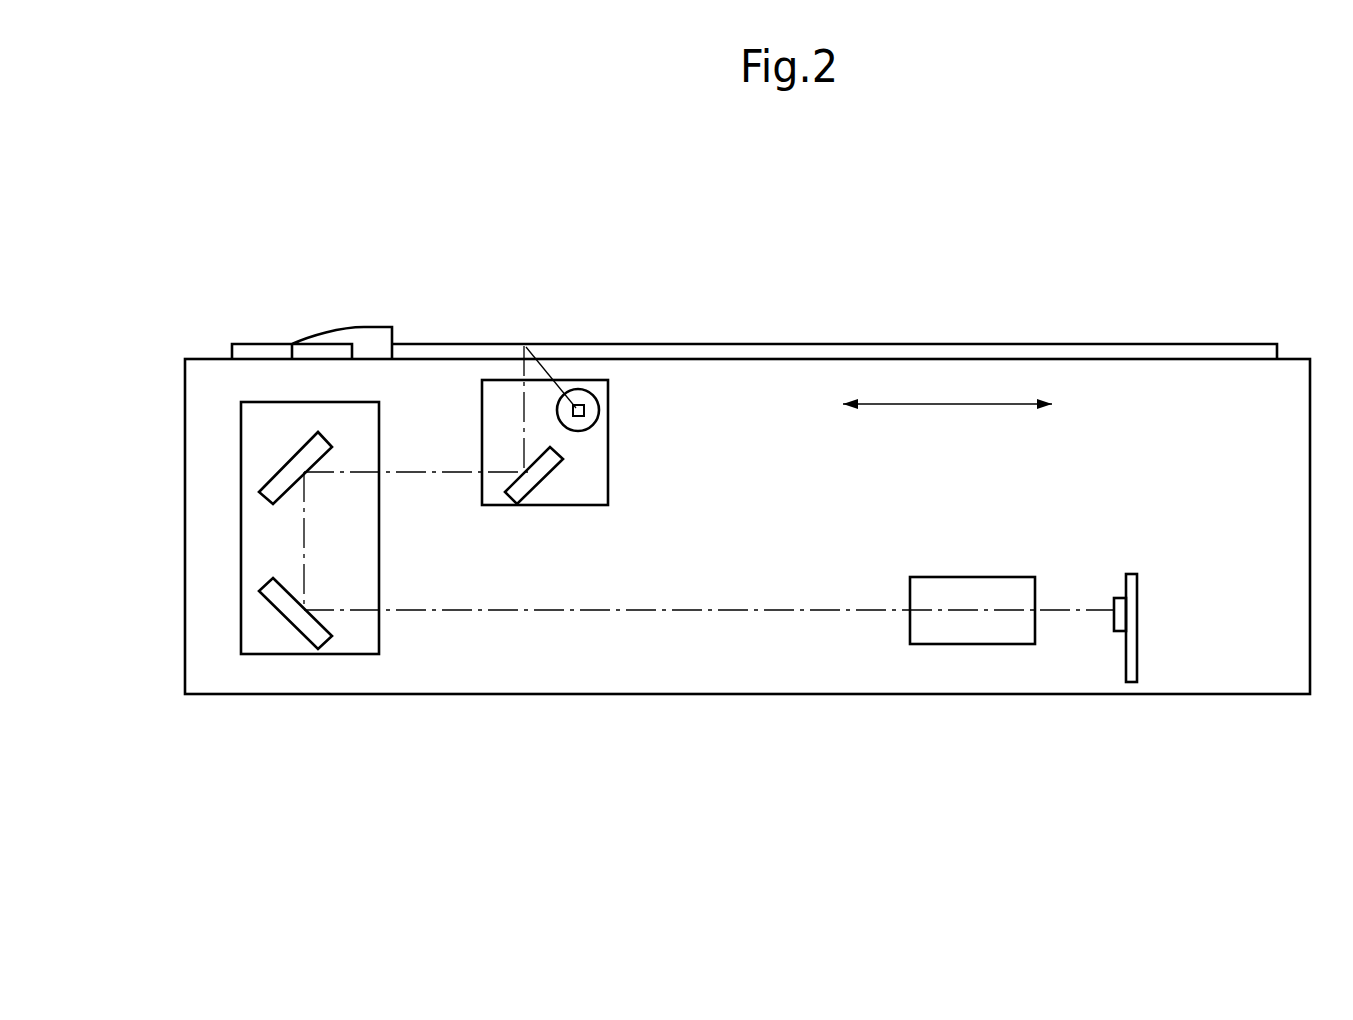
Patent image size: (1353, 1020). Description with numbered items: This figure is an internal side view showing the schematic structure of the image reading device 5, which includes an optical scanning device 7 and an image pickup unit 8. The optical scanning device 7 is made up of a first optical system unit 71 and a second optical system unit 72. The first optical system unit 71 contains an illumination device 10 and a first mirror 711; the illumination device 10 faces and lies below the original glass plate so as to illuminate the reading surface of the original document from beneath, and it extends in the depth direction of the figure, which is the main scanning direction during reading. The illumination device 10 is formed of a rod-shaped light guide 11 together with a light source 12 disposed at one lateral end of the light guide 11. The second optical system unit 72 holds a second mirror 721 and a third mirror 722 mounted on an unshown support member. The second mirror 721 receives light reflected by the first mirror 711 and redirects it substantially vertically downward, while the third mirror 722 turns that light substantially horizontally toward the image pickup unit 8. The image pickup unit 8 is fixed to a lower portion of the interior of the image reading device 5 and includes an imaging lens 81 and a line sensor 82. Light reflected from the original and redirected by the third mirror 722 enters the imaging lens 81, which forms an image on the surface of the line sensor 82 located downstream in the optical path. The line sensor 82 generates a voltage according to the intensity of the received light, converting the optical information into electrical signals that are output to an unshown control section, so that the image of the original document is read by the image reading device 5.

The image reading device 5 is at (1203, 299).
The optical scanning device 7 is at (740, 521).
The image pickup unit 8 is at (1080, 568).
The illumination device 10 is at (644, 358).
The rod-shaped light guide 11 is at (584, 406).
The light source 12 is at (590, 404).
The first optical system unit 71 is at (608, 478).
The first mirror 711 is at (542, 478).
The second optical system unit 72 is at (241, 540).
The second mirror 721 is at (297, 454).
The third mirror 722 is at (288, 622).
The imaging lens 81 is at (980, 577).
The line sensor 82 is at (1137, 618).